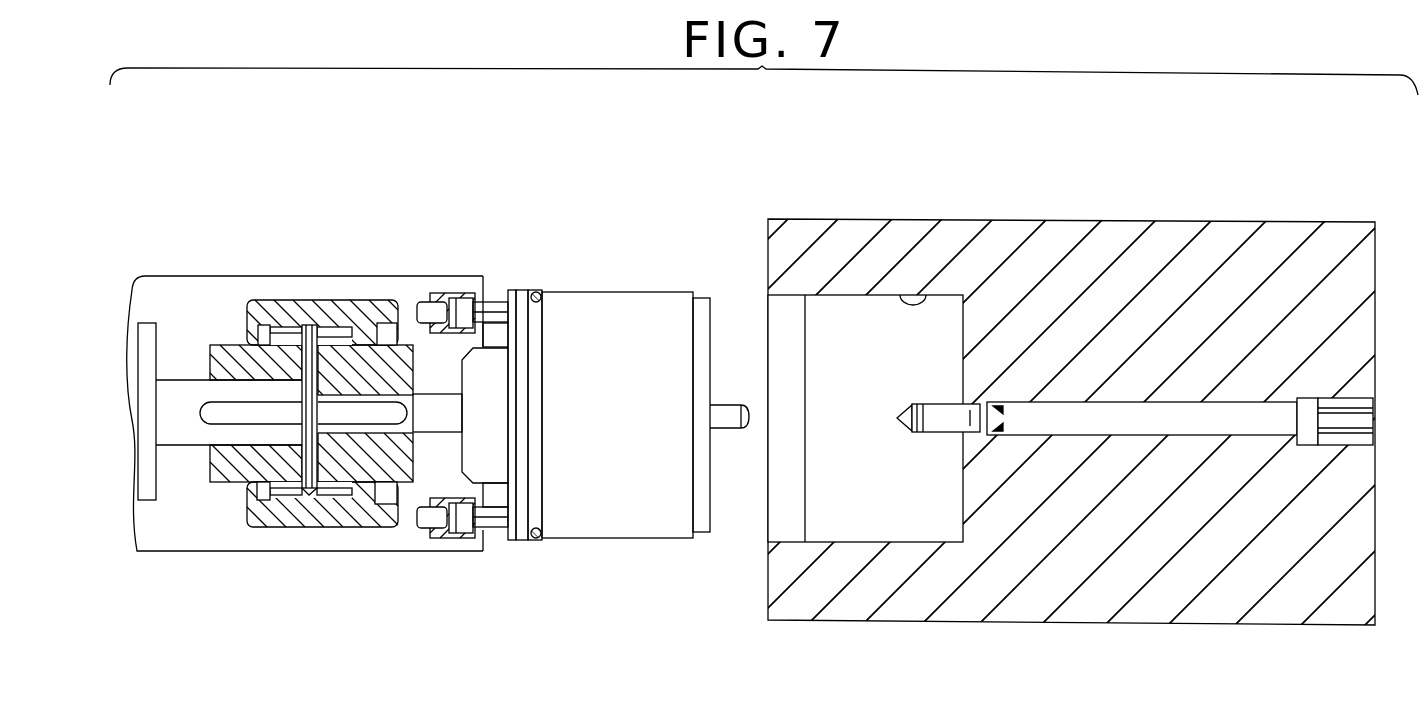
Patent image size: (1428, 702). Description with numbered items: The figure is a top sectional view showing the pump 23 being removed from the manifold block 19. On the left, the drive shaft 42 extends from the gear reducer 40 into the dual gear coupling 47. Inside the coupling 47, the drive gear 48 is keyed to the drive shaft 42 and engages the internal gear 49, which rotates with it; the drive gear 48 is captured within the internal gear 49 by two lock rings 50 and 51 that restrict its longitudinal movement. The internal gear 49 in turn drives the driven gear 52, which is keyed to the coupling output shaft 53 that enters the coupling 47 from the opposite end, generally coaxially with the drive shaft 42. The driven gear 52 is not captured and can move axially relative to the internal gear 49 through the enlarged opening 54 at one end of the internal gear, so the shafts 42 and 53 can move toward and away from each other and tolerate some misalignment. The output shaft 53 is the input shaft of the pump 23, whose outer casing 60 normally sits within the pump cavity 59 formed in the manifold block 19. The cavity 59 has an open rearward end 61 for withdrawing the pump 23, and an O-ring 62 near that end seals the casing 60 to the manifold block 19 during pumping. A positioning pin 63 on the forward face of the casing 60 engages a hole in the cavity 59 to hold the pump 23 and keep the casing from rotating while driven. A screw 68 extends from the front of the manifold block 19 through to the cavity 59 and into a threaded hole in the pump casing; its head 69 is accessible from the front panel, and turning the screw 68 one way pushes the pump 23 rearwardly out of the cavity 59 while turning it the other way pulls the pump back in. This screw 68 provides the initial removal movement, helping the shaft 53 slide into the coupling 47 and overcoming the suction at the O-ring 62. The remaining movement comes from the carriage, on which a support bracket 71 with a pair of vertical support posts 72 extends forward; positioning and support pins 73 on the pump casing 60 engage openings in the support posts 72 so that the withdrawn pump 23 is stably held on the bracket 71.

The manifold block 19 is at (1122, 240).
The pump 23 is at (626, 410).
The gear reducer 40 is at (150, 356).
The drive shaft 42 is at (173, 425).
The dual gear coupling 47 is at (317, 298).
The drive gear 48 is at (238, 460).
The internal gear 49 is at (340, 515).
The lock ring 50 is at (262, 510).
The lock ring 51 is at (308, 494).
The driven gear 52 is at (388, 459).
The coupling output shaft 53 is at (437, 402).
The enlarged opening 54 is at (389, 330).
The pump cavity 59 is at (915, 297).
The outer casing 60 is at (637, 515).
The open rearward end 61 is at (788, 318).
The O-ring 62 is at (538, 292).
The positioning pin 63 is at (722, 407).
The screw 68 is at (1128, 428).
The head 69 is at (1357, 420).
The support bracket 71 is at (178, 290).
The support posts 72 is at (462, 288).
The positioning and support pins 73 is at (433, 310).